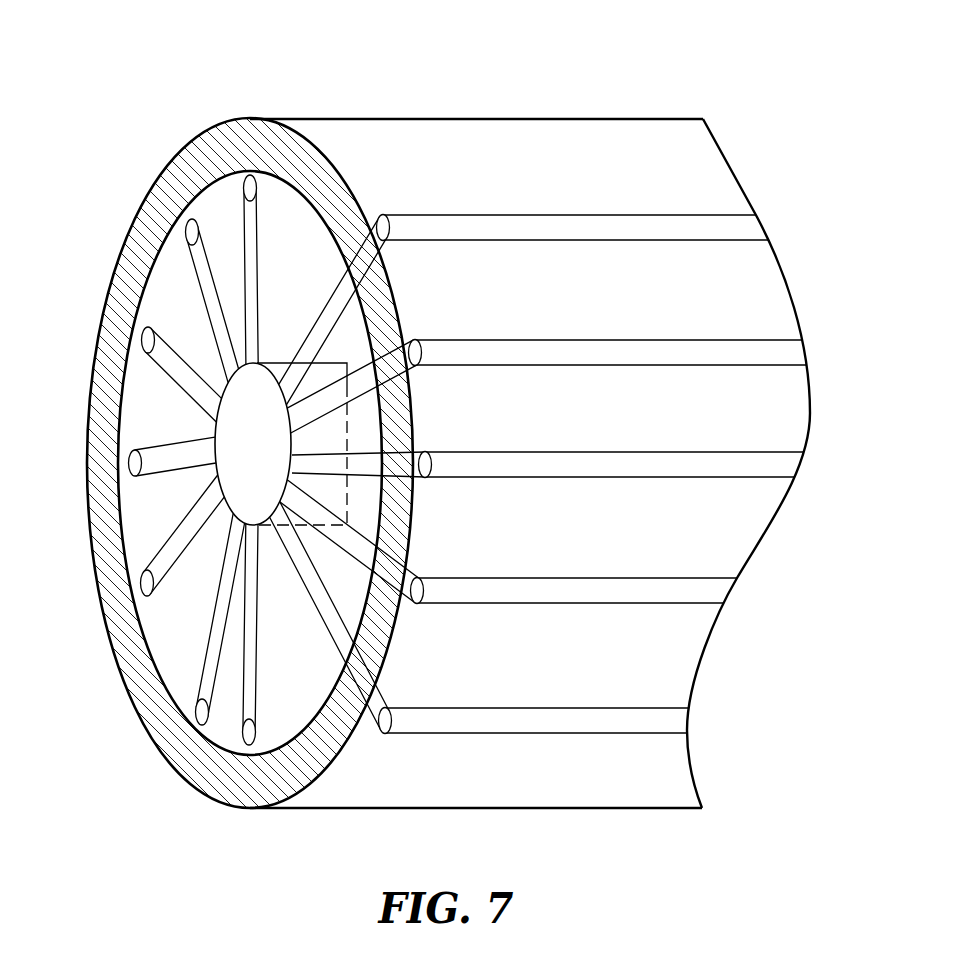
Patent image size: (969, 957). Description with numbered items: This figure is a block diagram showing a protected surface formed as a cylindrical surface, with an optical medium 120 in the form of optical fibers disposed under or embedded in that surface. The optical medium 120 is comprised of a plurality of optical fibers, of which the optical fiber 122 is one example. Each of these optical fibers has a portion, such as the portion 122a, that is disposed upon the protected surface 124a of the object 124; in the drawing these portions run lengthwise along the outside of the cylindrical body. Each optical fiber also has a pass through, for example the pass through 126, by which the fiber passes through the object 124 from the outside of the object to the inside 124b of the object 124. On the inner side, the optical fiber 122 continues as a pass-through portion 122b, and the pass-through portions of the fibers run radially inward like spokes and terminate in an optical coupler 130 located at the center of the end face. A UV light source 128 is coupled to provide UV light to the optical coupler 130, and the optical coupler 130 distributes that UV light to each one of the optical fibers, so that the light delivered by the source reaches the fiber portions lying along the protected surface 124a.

The optical medium 120 is at (565, 213).
The optical fiber 122 is at (597, 213).
The portion 122a is at (705, 216).
The pass-through portion 122b is at (318, 297).
The object 124 is at (525, 119).
The protected surface 124a is at (668, 305).
The inside 124b is at (269, 673).
The pass through 126 is at (386, 213).
The UV light source 128 is at (337, 363).
The optical coupler 130 is at (195, 362).